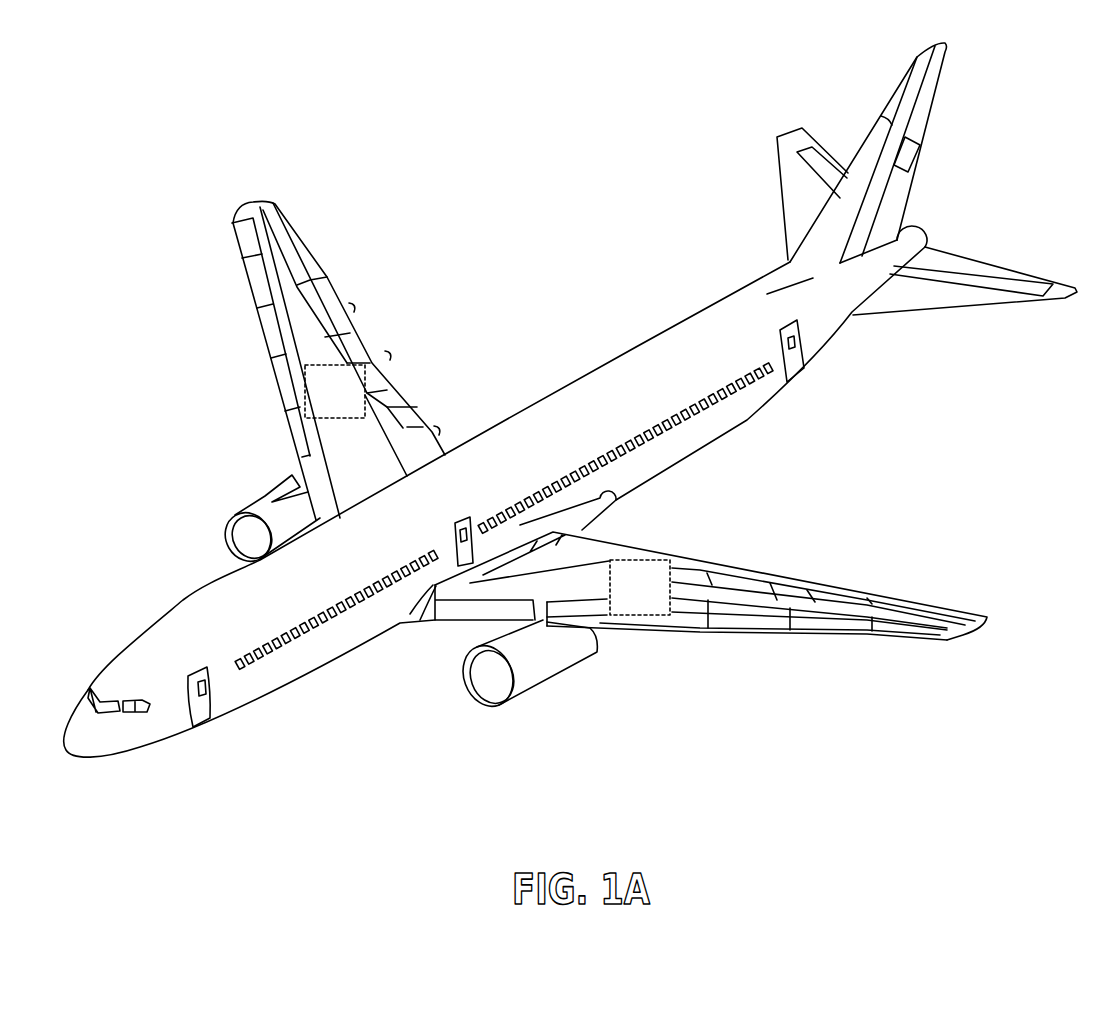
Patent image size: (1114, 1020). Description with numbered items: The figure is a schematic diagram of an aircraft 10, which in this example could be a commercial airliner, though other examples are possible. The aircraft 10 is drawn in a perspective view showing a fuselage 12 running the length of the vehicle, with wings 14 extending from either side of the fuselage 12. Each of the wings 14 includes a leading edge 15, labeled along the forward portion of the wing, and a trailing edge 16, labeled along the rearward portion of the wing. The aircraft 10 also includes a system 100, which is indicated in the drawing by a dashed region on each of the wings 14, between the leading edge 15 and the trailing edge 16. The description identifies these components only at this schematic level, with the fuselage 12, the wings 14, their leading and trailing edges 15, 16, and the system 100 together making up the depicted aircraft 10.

The aircraft 10 is at (570, 400).
The fuselage 12 is at (667, 450).
The wings 14 is at (632, 406).
The leading edge 15 is at (268, 343).
The trailing edge 16 is at (392, 388).
The system 100 is at (350, 378).